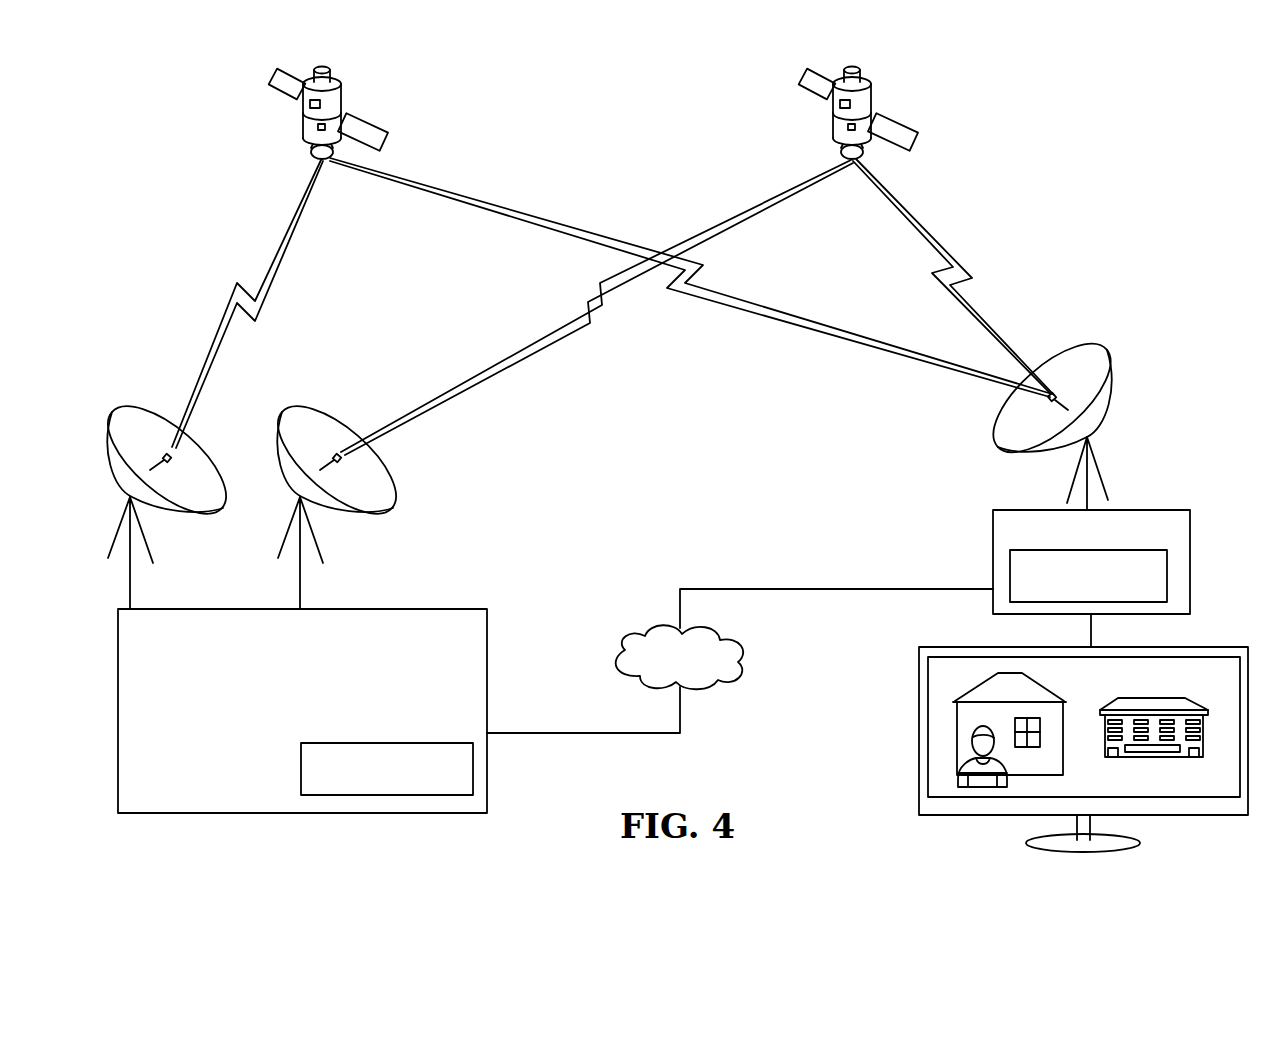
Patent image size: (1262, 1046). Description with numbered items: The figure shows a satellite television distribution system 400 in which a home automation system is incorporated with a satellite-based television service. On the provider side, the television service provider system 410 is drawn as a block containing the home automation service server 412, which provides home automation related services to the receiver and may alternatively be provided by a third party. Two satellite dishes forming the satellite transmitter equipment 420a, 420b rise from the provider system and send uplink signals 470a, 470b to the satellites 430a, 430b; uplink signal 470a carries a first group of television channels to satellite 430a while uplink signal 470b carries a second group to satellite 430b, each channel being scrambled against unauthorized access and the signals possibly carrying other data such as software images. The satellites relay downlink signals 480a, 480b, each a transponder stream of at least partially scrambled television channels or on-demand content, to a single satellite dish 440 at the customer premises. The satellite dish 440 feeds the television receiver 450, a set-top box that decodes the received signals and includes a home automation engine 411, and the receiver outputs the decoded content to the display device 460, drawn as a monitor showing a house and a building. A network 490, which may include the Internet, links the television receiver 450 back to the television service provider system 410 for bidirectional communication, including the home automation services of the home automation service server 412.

The satellite television distribution system 400 is at (184, 137).
The television service provider system 410 is at (483, 609).
The home automation engine 411 is at (1132, 595).
The home automation service server 412 is at (462, 788).
The satellite transmitter equipment 420a is at (128, 411).
The satellite transmitter equipment 420b is at (316, 387).
The satellite 430a is at (370, 122).
The satellite 430b is at (908, 122).
The satellite dish 440 is at (1090, 350).
The television receiver 450 is at (1149, 510).
The display device 460 is at (1213, 647).
The uplink signal 470a is at (728, 226).
The uplink signal 470b is at (280, 246).
The downlink signal 480a is at (480, 198).
The downlink signal 480b is at (935, 238).
The network 490 is at (620, 640).